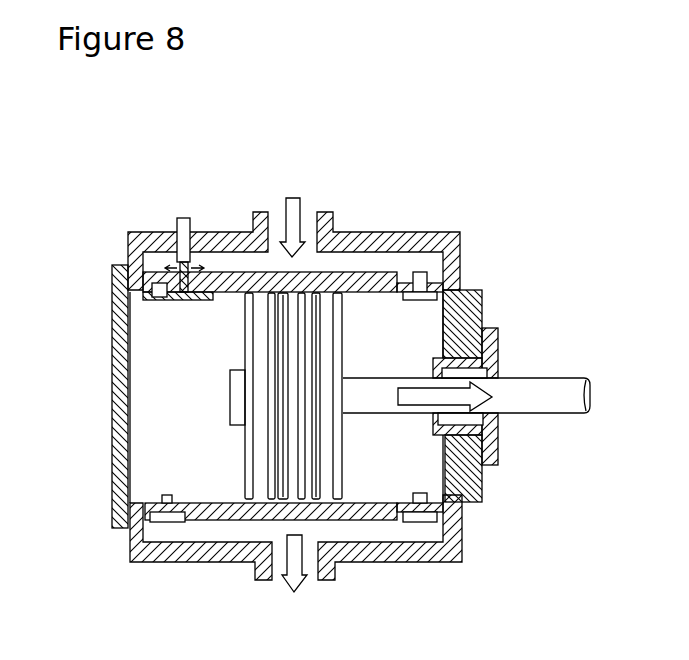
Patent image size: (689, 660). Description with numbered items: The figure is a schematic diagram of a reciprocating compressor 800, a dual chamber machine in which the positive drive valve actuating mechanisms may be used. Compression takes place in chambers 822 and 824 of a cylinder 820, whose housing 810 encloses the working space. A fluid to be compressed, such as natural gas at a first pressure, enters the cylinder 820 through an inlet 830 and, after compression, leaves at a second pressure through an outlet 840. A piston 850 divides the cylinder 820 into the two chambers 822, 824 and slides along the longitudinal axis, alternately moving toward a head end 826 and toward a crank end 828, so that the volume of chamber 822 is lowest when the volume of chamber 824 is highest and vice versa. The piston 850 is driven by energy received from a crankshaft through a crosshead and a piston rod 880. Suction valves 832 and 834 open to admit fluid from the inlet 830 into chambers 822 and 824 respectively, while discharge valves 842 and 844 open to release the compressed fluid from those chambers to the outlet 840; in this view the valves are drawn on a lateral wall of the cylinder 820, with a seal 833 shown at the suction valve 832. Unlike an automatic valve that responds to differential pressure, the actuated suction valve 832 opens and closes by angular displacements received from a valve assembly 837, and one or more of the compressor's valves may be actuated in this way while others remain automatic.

The reciprocating compressor 800 is at (488, 189).
The housing 810 is at (472, 503).
The cylinder 820 is at (358, 512).
The chamber 822 is at (145, 445).
The chamber 824 is at (425, 477).
The head end 826 is at (117, 385).
The crank end 828 is at (467, 317).
The inlet 830 is at (298, 206).
The suction valve 832 is at (150, 296).
The gasket 833 is at (188, 298).
The suction valve 834 is at (448, 285).
The valve assembly 837 is at (178, 224).
The outlet 840 is at (290, 586).
The discharge valve 842 is at (165, 518).
The discharge valve 844 is at (423, 520).
The piston 850 is at (262, 485).
The piston rod 880 is at (528, 390).